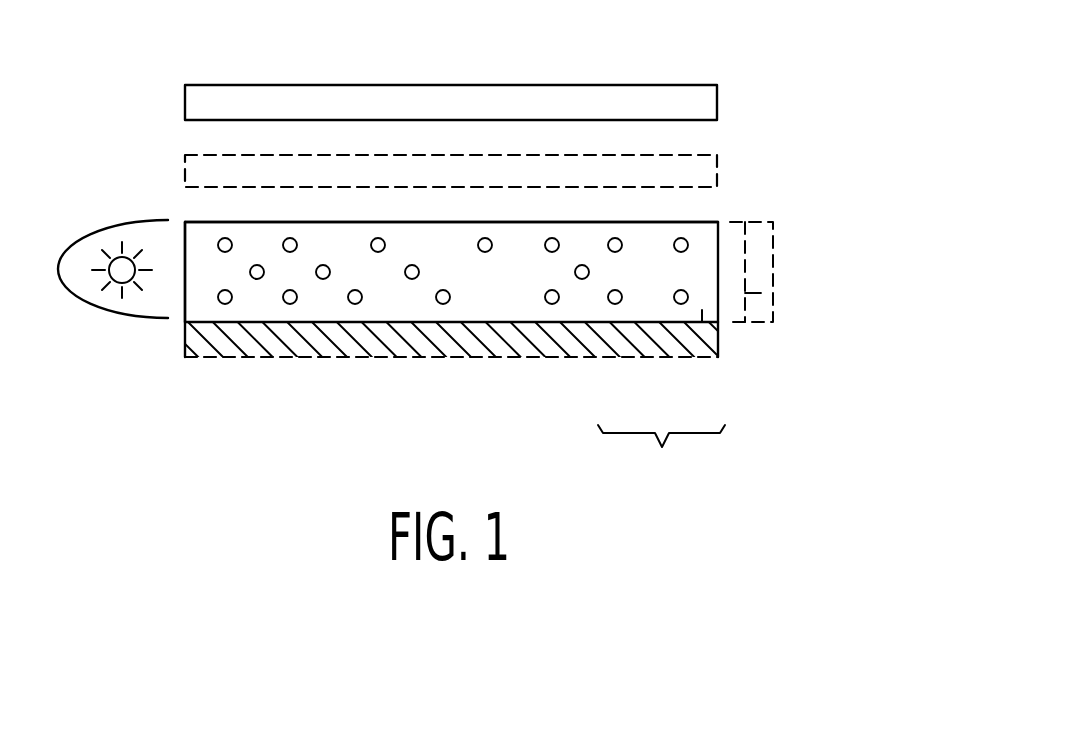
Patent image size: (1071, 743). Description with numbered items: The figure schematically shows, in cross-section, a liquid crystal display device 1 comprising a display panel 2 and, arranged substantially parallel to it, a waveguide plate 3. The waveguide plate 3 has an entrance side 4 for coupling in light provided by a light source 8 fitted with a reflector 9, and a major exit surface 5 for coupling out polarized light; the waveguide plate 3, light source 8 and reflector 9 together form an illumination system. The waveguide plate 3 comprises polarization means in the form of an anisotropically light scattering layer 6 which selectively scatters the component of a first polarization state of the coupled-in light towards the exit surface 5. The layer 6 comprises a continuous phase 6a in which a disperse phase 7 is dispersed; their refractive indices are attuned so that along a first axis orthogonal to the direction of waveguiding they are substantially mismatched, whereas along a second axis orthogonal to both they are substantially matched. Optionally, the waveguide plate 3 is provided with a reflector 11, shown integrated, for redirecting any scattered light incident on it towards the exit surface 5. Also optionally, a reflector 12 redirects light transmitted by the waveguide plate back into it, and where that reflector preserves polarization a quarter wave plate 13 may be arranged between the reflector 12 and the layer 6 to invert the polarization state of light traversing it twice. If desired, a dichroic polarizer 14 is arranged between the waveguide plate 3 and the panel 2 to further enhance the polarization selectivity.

The liquid crystal display device 1 is at (122, 134).
The display panel 2 is at (700, 100).
The waveguide plate 3 is at (897, 220).
The entrance side 4 is at (183, 303).
The exit surface 5 is at (205, 221).
The anisotropically light scattering layer 6 is at (661, 455).
The continuous phase 6a is at (702, 322).
The disperse phase 7 is at (552, 304).
The light source 8 is at (122, 298).
The reflector 9 is at (73, 297).
The reflector 11 is at (298, 340).
The reflector 12 is at (775, 292).
The quarter wave plate 13 is at (733, 245).
The dichroic polarizer 14 is at (720, 179).